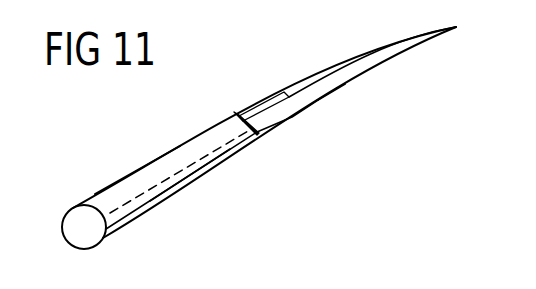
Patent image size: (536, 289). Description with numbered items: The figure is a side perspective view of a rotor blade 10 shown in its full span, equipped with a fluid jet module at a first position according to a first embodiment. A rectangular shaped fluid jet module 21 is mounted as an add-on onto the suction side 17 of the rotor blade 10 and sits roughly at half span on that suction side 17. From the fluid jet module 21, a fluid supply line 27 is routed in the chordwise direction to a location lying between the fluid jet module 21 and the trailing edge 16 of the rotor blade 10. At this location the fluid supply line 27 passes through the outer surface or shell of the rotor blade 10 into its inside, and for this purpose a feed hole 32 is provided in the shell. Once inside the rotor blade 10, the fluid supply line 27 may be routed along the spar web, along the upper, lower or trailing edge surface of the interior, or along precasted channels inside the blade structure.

The rotor blade 10 is at (114, 162).
The trailing edge 16 is at (379, 101).
The suction side 17 is at (180, 146).
The fluid jet module 21 is at (309, 133).
The fluid supply line 27 is at (227, 189).
The feed hole 32 is at (278, 162).